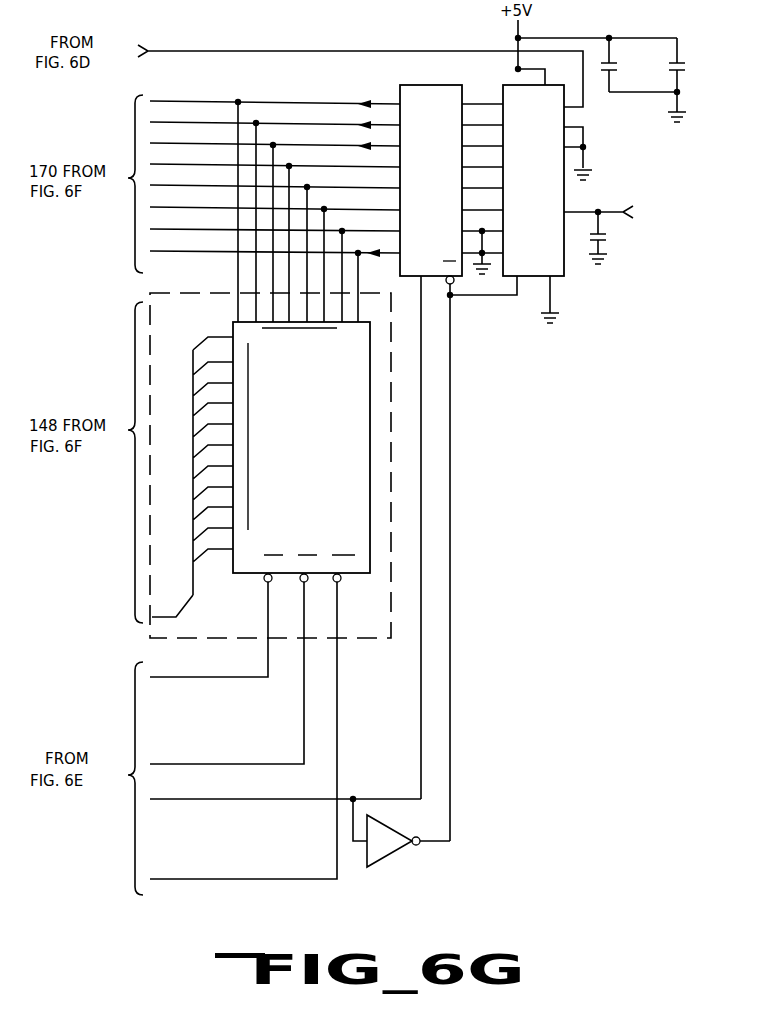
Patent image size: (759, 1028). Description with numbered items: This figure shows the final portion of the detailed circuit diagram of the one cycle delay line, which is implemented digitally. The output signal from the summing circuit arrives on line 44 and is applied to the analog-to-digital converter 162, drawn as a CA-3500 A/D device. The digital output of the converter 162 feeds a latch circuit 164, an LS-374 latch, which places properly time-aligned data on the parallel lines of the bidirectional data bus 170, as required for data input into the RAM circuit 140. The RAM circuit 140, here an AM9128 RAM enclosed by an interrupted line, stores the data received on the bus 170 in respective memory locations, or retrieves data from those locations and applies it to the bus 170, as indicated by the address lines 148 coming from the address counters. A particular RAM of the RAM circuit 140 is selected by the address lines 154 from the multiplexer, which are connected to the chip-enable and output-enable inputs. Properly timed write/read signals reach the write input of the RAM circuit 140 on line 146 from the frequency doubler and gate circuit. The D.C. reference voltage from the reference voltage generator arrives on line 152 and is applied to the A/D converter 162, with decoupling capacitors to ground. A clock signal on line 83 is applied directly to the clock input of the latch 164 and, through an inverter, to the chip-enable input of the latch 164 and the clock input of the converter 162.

The line 44 is at (280, 52).
The latch circuit 164 is at (420, 87).
The analog-to-digital converter 162 is at (511, 87).
The line 152 is at (585, 212).
The bidirectional data bus 170 is at (266, 210).
The address lines 148 is at (131, 477).
The random access memory circuit 140 is at (349, 637).
The address lines 154 is at (207, 678).
The clock line 83 is at (219, 800).
The line 146 is at (220, 879).